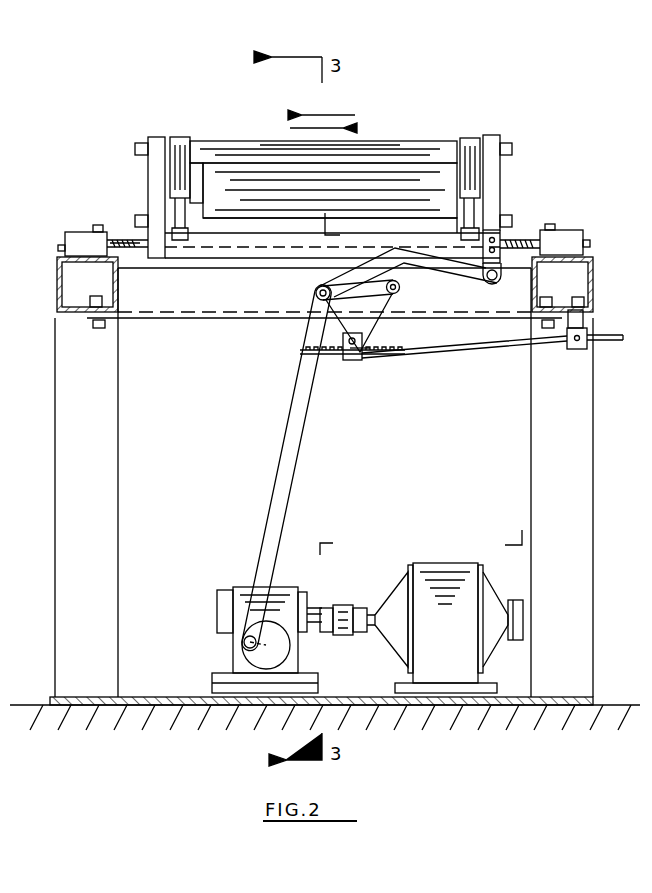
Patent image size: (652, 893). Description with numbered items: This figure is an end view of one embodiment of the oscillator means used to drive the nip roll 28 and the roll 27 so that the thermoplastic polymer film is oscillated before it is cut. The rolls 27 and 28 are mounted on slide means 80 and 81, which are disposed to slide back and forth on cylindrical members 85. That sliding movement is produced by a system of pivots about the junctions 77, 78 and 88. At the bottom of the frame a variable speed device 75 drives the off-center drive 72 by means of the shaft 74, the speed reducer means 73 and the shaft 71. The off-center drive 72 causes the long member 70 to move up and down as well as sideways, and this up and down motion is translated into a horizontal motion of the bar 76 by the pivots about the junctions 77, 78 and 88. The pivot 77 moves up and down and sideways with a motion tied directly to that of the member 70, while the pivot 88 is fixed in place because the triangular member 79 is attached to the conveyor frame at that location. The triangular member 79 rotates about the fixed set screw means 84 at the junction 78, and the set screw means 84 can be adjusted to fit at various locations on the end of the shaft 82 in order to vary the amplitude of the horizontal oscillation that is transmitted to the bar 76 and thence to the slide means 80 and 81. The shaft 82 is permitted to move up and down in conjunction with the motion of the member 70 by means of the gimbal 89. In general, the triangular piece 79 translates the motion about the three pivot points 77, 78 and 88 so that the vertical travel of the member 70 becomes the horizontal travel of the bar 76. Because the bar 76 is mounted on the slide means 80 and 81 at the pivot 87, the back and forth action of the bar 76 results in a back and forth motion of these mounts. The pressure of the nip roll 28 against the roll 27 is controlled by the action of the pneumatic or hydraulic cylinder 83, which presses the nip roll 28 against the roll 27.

The roll 27 is at (432, 178).
The nip roll 28 is at (209, 205).
The member 70 is at (272, 468).
The shaft 71 is at (291, 649).
The off-center drive 72 is at (252, 654).
The speed reducer means 73 is at (243, 588).
The shaft 74 is at (371, 608).
The motor 75 is at (446, 563).
The bar 76 is at (453, 268).
The pivot junction 77 is at (316, 292).
The pivot junction 78 is at (361, 355).
The triangular member 79 is at (366, 318).
The slide means 80 is at (148, 185).
The slide means 81 is at (503, 183).
The shaft 82 is at (502, 344).
The pneumatic or hydraulic cylinder 83 is at (174, 145).
The set screw means 84 is at (351, 361).
The cylindrical members 85 is at (126, 238).
The pivot 87 is at (491, 283).
The pivot junction 88 is at (399, 290).
The gimbal 89 is at (588, 346).